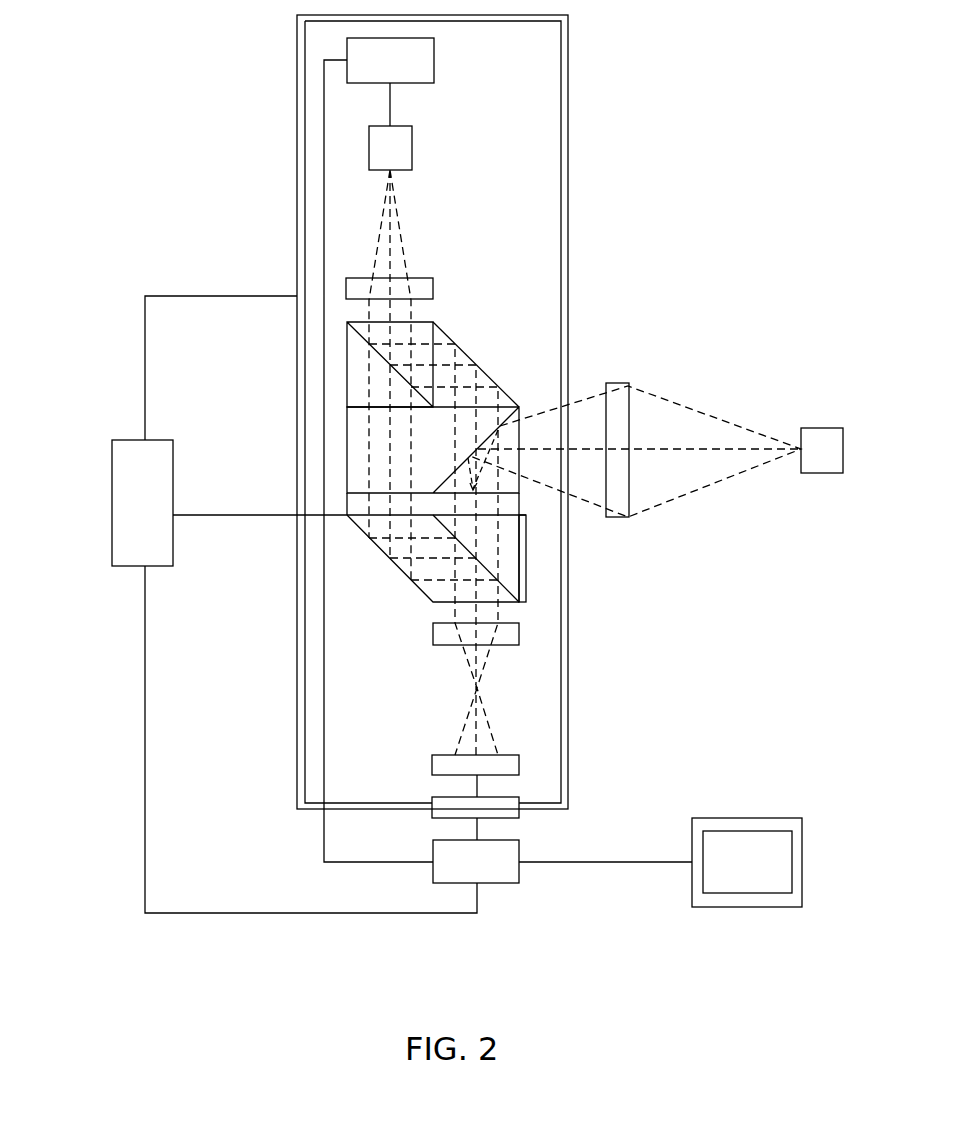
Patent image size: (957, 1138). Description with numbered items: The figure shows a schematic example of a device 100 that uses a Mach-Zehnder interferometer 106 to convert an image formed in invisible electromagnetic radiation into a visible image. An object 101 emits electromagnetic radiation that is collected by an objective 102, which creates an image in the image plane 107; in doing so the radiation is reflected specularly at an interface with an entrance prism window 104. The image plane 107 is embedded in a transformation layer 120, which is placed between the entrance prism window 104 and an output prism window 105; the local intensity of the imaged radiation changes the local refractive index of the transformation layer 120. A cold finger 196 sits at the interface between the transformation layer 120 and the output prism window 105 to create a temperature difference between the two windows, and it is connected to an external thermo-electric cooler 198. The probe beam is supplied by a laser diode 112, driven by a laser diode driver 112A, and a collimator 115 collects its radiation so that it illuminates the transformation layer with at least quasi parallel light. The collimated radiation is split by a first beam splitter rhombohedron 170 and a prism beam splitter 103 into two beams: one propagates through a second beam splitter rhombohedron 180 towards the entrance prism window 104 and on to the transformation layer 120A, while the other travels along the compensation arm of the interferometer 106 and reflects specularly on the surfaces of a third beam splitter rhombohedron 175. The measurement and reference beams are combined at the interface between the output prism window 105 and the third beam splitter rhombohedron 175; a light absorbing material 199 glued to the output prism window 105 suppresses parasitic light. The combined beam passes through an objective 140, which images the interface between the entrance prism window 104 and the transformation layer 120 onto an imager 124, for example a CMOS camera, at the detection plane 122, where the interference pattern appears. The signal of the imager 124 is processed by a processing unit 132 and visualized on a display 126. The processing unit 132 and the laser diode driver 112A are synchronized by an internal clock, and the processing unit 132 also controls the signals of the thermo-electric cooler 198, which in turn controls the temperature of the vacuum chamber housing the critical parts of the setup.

The thermo-electric cooler 198 is at (136, 497).
The laser diode driver 112A is at (420, 68).
The laser diode 112 is at (399, 158).
The collimator 115 is at (420, 289).
The prism beam splitter 103 is at (373, 380).
The first beam splitter rhombohedron 170 is at (436, 336).
The second beam splitter rhombohedron 180 is at (423, 443).
The entrance prism window 104 is at (511, 437).
The transformation layer 120 is at (454, 502).
The third beam splitter rhombohedron 175 is at (430, 545).
The output prism window 105 is at (490, 550).
The light absorbing material 199 is at (530, 587).
The image plane 107 is at (498, 502).
The transformation layer (measurement volume) 120A is at (490, 521).
The cold finger 196 is at (460, 540).
The objective 102 is at (620, 405).
The object 101 is at (832, 449).
The objective 140 is at (443, 637).
The detection plane 122 is at (438, 765).
The imager 124 is at (448, 807).
The processing unit 132 is at (450, 854).
The display 126 is at (760, 880).
The Mach-Zehnder interferometer 106 is at (515, 226).
The device 100 is at (714, 231).